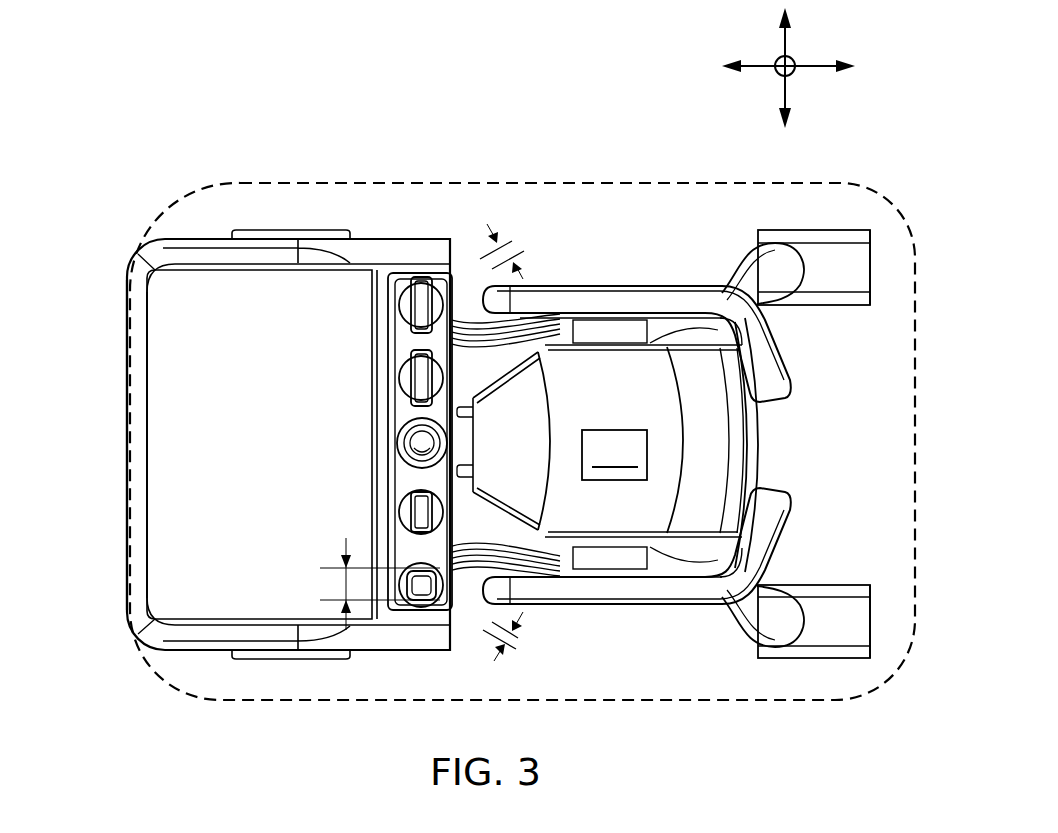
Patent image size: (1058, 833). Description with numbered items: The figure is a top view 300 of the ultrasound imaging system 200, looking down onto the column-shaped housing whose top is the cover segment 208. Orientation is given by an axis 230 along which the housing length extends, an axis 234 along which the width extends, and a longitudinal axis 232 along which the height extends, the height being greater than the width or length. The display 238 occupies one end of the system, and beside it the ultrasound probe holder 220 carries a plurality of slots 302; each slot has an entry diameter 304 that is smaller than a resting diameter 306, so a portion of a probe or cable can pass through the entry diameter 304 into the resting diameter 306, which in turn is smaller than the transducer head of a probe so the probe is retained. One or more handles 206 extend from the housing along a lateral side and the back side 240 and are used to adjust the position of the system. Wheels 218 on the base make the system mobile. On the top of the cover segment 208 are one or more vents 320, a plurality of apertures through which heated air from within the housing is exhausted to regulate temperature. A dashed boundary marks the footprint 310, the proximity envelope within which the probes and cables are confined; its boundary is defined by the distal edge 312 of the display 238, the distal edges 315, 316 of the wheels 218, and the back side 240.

The ultrasound imaging system 200 is at (108, 572).
The handle 206 is at (595, 286).
The cover segment 208 is at (752, 420).
The wheels 218 is at (814, 307).
The ultrasound probe holder 220 is at (407, 237).
The axis 230 is at (757, 66).
The longitudinal axis 232 is at (787, 98).
The axis 234 is at (790, 42).
The display 238 is at (127, 362).
The back side 240 is at (793, 455).
The top view 300 is at (132, 176).
The slots 302 is at (462, 281).
The entry diameter 304 is at (523, 250).
The resting diameter 306 is at (345, 584).
The footprint 310 is at (369, 703).
The distal edge 312 is at (127, 457).
The distal edge 315 is at (872, 236).
The distal edge 316 is at (865, 662).
The vents 320 is at (598, 445).